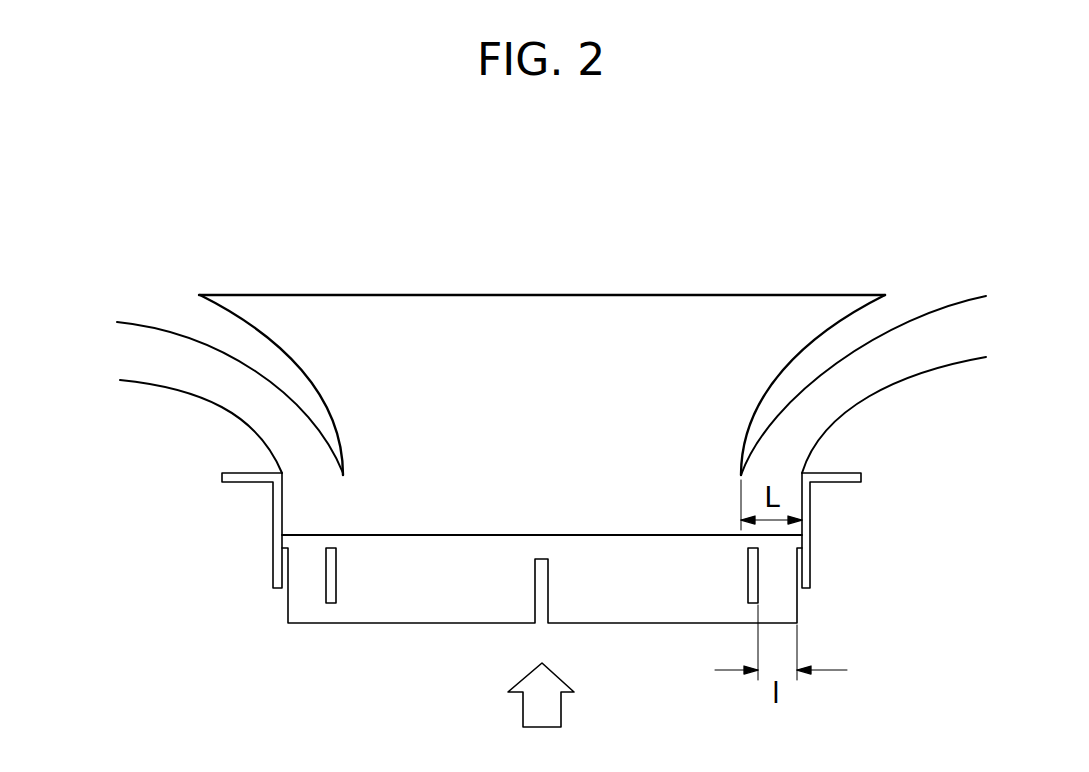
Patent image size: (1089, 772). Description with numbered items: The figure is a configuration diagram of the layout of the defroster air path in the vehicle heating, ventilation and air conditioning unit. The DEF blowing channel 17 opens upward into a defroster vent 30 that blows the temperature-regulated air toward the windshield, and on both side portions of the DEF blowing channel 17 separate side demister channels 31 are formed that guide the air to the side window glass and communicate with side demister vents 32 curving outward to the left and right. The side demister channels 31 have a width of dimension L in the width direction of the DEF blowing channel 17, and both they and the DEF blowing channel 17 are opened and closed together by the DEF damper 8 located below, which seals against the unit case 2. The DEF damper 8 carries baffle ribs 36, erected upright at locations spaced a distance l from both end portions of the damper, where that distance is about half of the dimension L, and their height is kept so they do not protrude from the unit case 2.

The unit case 2 is at (843, 482).
The DEF damper 8 is at (458, 600).
The DEF blowing channel 17 is at (592, 520).
The defroster vent 30 is at (538, 295).
The side demister channels 31 is at (263, 422).
The side demister vents 32 is at (123, 350).
The baffle ribs 36 is at (337, 598).